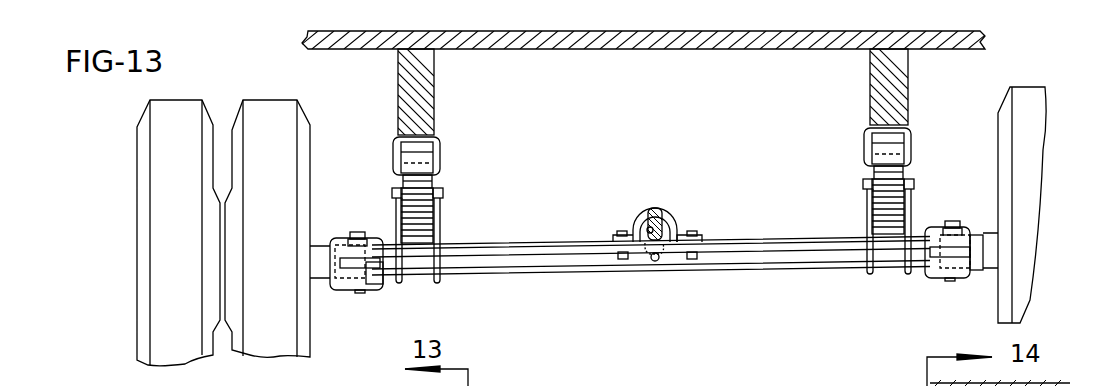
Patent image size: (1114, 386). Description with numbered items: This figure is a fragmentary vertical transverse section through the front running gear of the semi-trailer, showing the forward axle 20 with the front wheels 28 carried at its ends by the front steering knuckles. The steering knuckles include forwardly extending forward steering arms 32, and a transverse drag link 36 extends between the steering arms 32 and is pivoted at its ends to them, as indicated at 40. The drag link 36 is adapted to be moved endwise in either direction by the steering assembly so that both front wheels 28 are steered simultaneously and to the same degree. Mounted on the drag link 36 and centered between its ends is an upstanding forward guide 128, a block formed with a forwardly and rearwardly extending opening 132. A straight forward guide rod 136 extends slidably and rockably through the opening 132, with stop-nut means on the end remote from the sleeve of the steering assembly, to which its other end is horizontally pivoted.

The forward axle 20 is at (700, 269).
The front wheel 28 is at (131, 217).
The forward steering arm 32 is at (321, 278).
The drag link 36 is at (747, 246).
The pivot 40 is at (362, 236).
The forward guide 128 is at (672, 222).
The opening 132 is at (647, 230).
The forward guide rod 136 is at (652, 210).